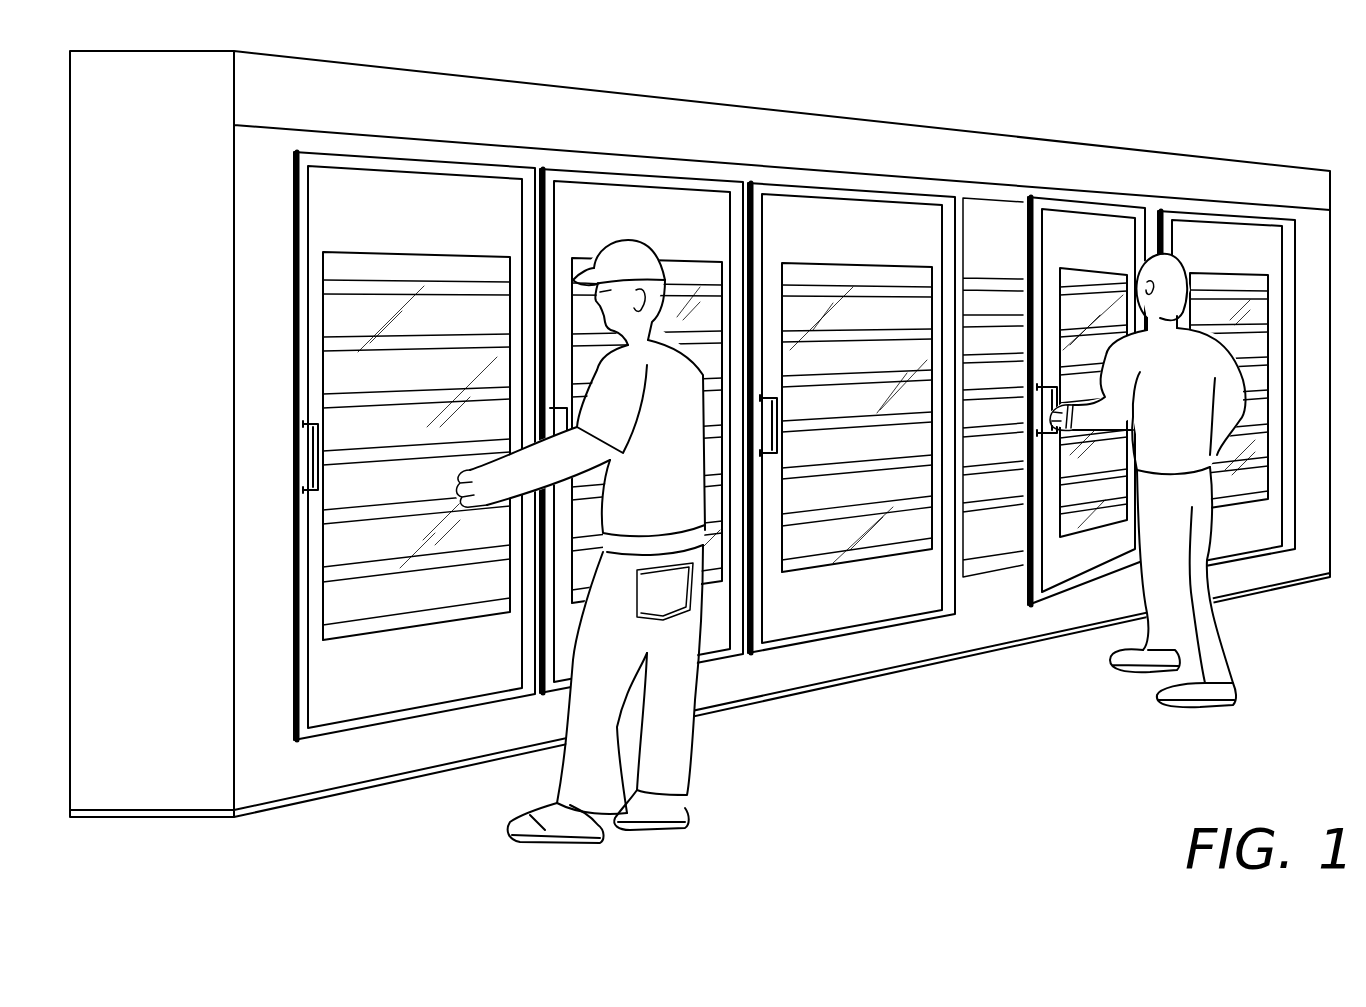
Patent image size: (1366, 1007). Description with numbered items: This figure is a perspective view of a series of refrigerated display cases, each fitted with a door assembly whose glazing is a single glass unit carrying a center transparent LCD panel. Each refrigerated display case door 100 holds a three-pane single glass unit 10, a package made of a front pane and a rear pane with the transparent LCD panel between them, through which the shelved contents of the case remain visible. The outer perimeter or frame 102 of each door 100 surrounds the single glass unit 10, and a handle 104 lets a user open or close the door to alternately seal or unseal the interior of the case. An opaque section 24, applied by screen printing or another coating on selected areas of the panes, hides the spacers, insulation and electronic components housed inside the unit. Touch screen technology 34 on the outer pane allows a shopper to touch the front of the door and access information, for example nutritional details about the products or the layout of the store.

The refrigerated display case door 100 is at (410, 168).
The single glass unit 10 is at (390, 609).
The opaque section 24 is at (428, 227).
The touch screen technology 34 is at (422, 493).
The outer perimeter or frame 102 is at (907, 618).
The handle 104 is at (303, 455).